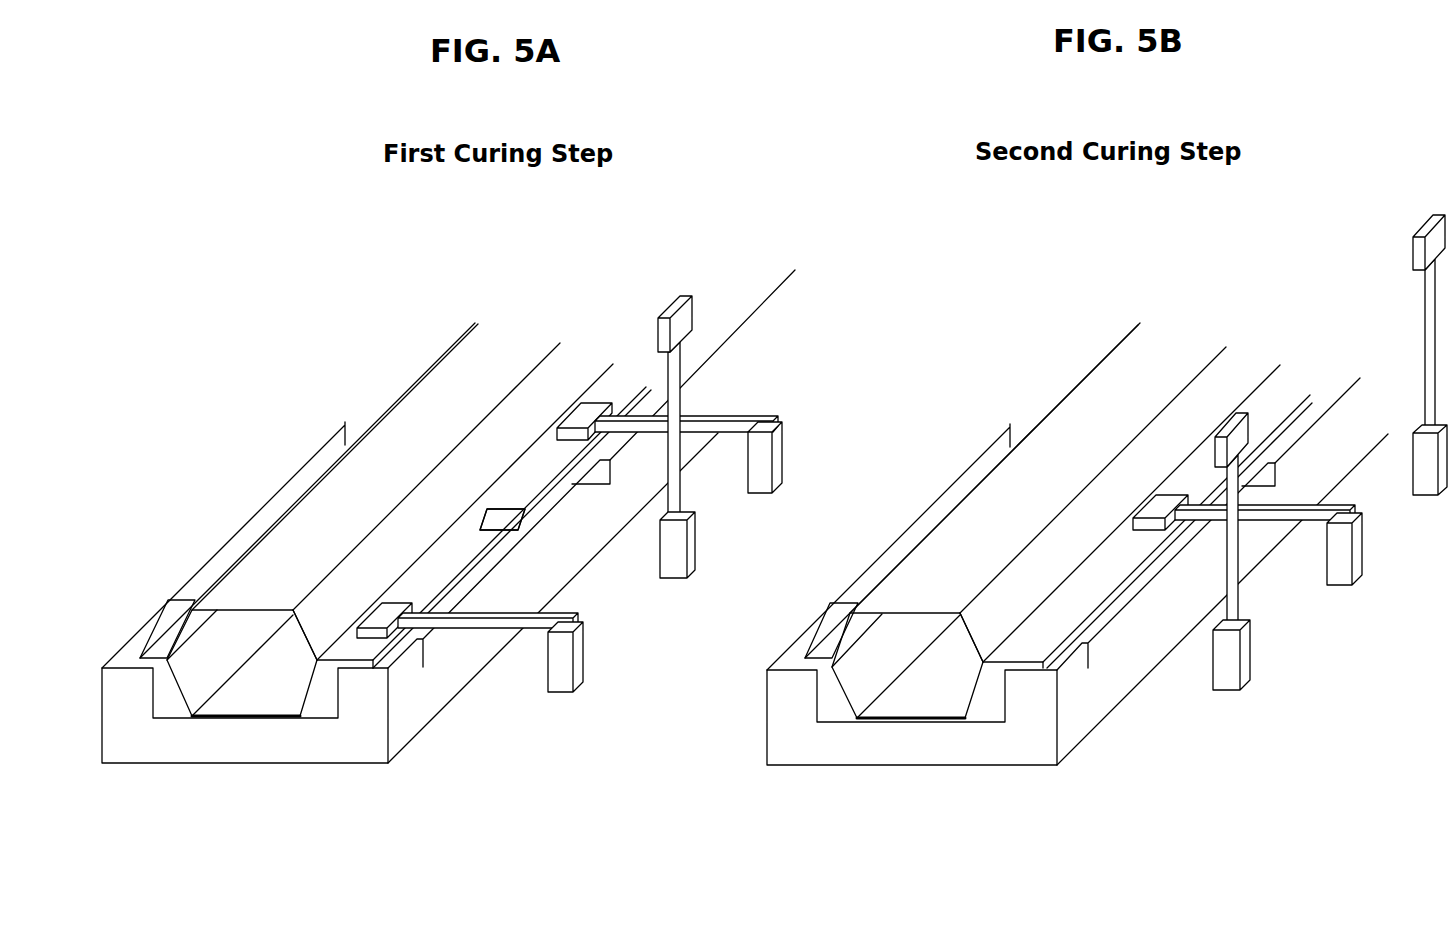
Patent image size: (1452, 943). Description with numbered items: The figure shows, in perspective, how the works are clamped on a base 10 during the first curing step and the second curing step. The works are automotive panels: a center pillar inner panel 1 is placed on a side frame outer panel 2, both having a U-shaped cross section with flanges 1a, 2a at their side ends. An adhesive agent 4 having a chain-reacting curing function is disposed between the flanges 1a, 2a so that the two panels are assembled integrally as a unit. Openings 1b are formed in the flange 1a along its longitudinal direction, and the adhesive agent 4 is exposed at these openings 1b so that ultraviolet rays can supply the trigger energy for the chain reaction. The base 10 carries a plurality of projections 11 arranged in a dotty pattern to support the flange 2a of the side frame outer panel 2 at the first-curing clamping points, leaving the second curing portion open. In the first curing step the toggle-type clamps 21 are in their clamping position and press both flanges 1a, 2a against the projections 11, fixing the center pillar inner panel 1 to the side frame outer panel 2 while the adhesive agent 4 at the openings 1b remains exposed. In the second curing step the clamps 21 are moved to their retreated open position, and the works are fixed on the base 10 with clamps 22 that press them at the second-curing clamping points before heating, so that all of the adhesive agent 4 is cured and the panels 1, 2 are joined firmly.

In FIG. 5A, the center pillar inner panel 1 is at (322, 455).
In FIG. 5B, the center pillar inner panel 1 is at (988, 455).
In FIG. 5A, the flange 1a is at (425, 592).
In FIG. 5B, the flange 1a is at (1050, 625).
In FIG. 5A, the opening 1b is at (493, 532).
In FIG. 5A, the side frame outer panel 2 is at (270, 720).
In FIG. 5B, the side frame outer panel 2 is at (944, 718).
In FIG. 5A, the flange 2a is at (493, 548).
In FIG. 5B, the flange 2a is at (1120, 595).
In FIG. 5A, the adhesive agent 4 is at (487, 530).
In FIG. 5A, the base 10 is at (248, 763).
In FIG. 5B, the base 10 is at (912, 766).
In FIG. 5A, the projection 11 is at (123, 688).
In FIG. 5B, the projection 11 is at (790, 690).
In FIG. 5A, the clamp for the first curing step 21 is at (375, 618).
In FIG. 5B, the clamp for the first curing step 21 is at (1222, 430).
In FIG. 5A, the clamp for the second curing step 22 is at (693, 307).
In FIG. 5B, the clamp for the second curing step 22 is at (1140, 512).